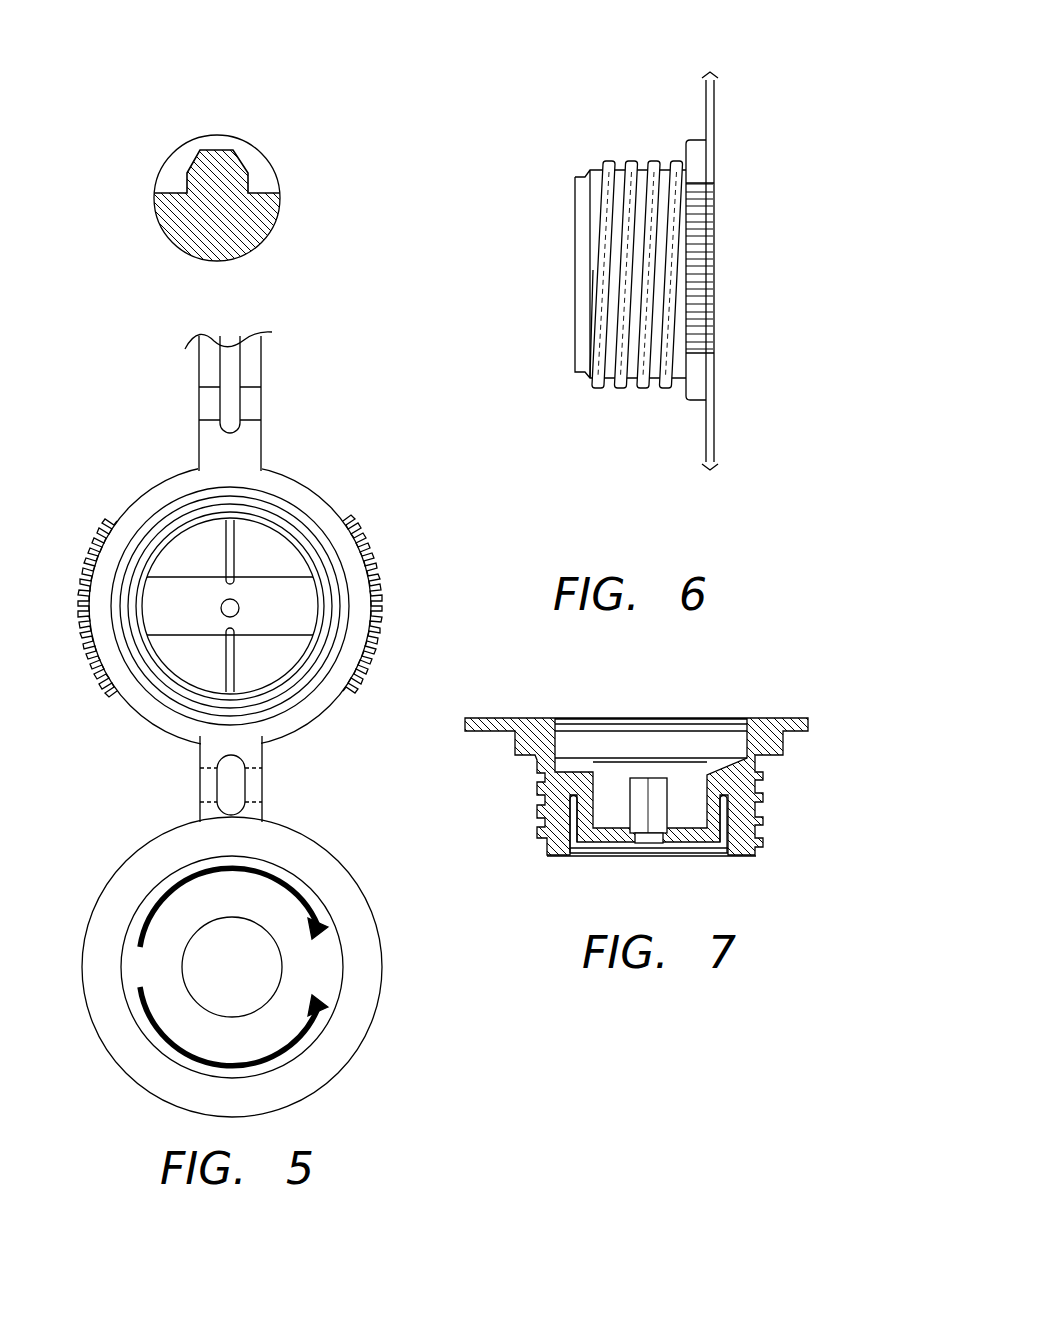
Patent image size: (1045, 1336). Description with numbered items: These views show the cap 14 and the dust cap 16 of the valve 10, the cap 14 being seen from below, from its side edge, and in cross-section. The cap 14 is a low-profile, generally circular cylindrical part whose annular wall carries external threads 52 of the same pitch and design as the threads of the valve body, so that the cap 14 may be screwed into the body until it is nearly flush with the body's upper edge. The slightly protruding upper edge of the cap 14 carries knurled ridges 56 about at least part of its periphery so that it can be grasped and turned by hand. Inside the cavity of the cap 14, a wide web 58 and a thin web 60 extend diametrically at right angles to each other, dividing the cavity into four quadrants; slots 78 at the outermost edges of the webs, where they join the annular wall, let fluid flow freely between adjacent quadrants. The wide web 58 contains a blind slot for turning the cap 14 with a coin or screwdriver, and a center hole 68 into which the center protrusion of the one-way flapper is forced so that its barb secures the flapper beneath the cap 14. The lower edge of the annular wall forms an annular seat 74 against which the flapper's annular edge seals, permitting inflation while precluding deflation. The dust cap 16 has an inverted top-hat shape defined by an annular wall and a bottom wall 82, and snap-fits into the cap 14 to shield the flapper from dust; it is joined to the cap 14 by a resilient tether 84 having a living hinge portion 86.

In FIG. 5, the valve 10 is at (389, 412).
In FIG. 6, the valve 10 is at (782, 90).
In FIG. 7, the valve 10 is at (780, 670).
In FIG. 5, the cap 14 is at (256, 547).
In FIG. 6, the cap 14 is at (716, 234).
In FIG. 5, the dust cap 16 is at (277, 956).
In FIG. 5, the external threads 52 is at (217, 150).
In FIG. 6, the external threads 52 is at (657, 160).
In FIG. 7, the external threads 52 is at (546, 778).
In FIG. 5, the knurled ridges 56 is at (380, 633).
In FIG. 6, the knurled ridges 56 is at (698, 331).
In FIG. 5, the wide web 58 is at (286, 596).
In FIG. 7, the wide web 58 is at (607, 820).
In FIG. 5, the web 60 is at (240, 542).
In FIG. 5, the center hole 68 is at (222, 612).
In FIG. 7, the annular seat 74 is at (748, 858).
In FIG. 7, the slots 78 is at (574, 809).
In FIG. 5, the bottom wall 82 is at (334, 957).
In FIG. 5, the resilient tether 84 is at (280, 778).
In FIG. 5, the living hinge portion 86 is at (257, 788).